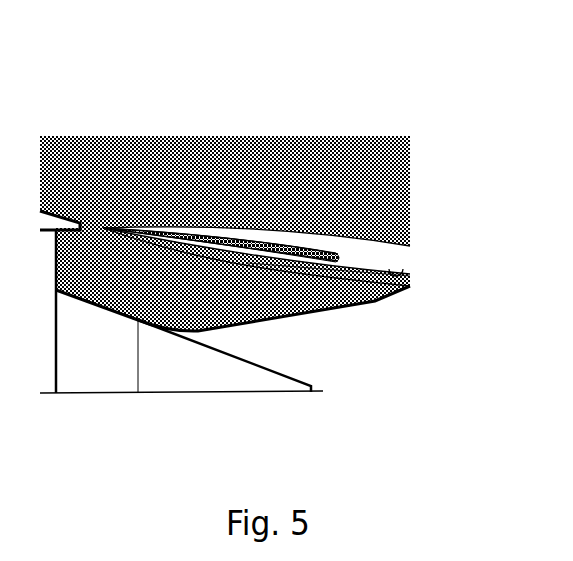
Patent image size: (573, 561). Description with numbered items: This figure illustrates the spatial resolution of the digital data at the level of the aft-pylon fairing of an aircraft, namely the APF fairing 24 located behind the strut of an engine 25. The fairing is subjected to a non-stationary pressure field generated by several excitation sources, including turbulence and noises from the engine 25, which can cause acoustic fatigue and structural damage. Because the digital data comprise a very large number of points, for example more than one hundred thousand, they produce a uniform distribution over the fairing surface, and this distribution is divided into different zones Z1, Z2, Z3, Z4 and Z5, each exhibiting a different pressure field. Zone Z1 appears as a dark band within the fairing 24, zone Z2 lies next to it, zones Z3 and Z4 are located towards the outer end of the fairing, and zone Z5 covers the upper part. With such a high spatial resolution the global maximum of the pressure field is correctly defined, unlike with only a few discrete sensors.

The APF fairing 24 is at (170, 162).
The engine 25 is at (107, 406).
The zone Z1 is at (208, 227).
The zone Z2 is at (285, 243).
The zone Z3 is at (387, 253).
The zone Z4 is at (391, 236).
The zone Z5 is at (358, 143).